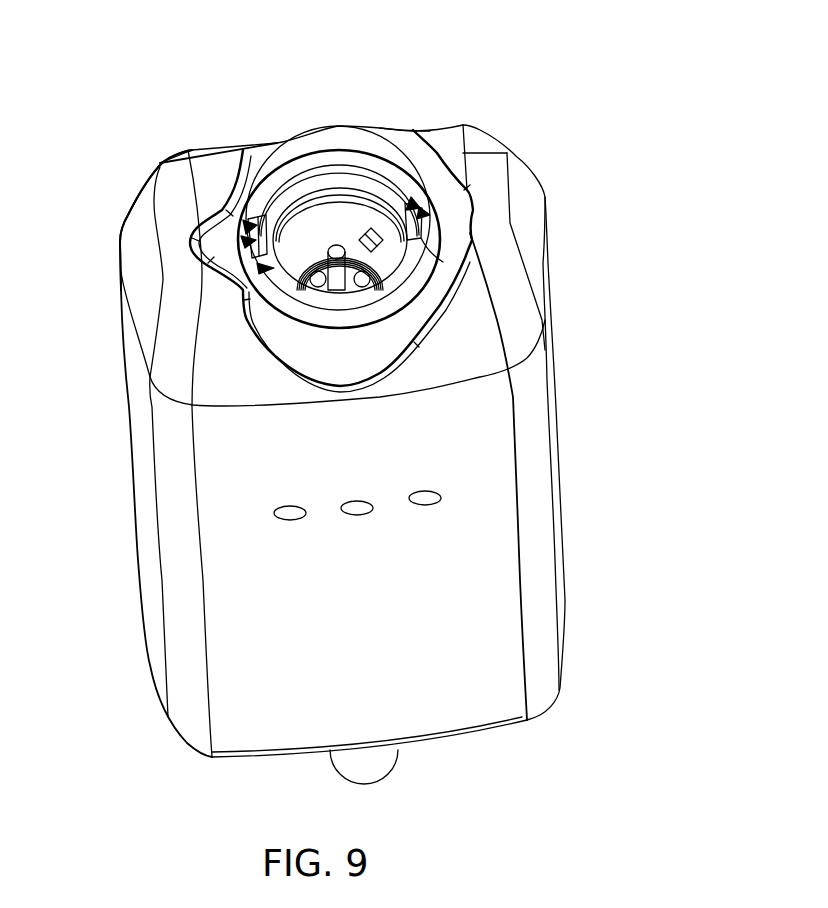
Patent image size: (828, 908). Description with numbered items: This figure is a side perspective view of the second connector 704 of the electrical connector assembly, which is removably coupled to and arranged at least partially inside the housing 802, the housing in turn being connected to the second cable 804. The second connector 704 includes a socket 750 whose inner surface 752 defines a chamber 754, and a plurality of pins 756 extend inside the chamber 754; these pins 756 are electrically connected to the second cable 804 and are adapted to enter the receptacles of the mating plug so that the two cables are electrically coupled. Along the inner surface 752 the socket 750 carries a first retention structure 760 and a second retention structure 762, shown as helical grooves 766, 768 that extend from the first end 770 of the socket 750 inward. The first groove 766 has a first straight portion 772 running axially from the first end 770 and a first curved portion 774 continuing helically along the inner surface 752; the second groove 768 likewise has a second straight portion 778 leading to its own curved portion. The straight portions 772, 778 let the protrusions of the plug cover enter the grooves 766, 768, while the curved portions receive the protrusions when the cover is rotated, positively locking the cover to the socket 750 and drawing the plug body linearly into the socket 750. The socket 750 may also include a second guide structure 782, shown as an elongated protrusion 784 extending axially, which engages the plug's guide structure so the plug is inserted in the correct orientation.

The second connector 704 is at (258, 267).
The socket 750 is at (462, 238).
The inner surface 752 is at (268, 195).
The chamber 754 is at (353, 216).
The pins 756 is at (343, 244).
The first retention structure 760 is at (245, 222).
The second retention structure 762 is at (423, 207).
The first groove 766 is at (243, 242).
The second groove 768 is at (430, 208).
The first end 770 is at (415, 150).
The first straight portion 772 is at (250, 214).
The first curved portion 774 is at (276, 190).
The second straight portion 778 is at (447, 243).
The second guide structure 782 is at (407, 265).
The elongated protrusion 784 is at (375, 255).
The housing 802 is at (473, 605).
The second cable 804 is at (368, 762).